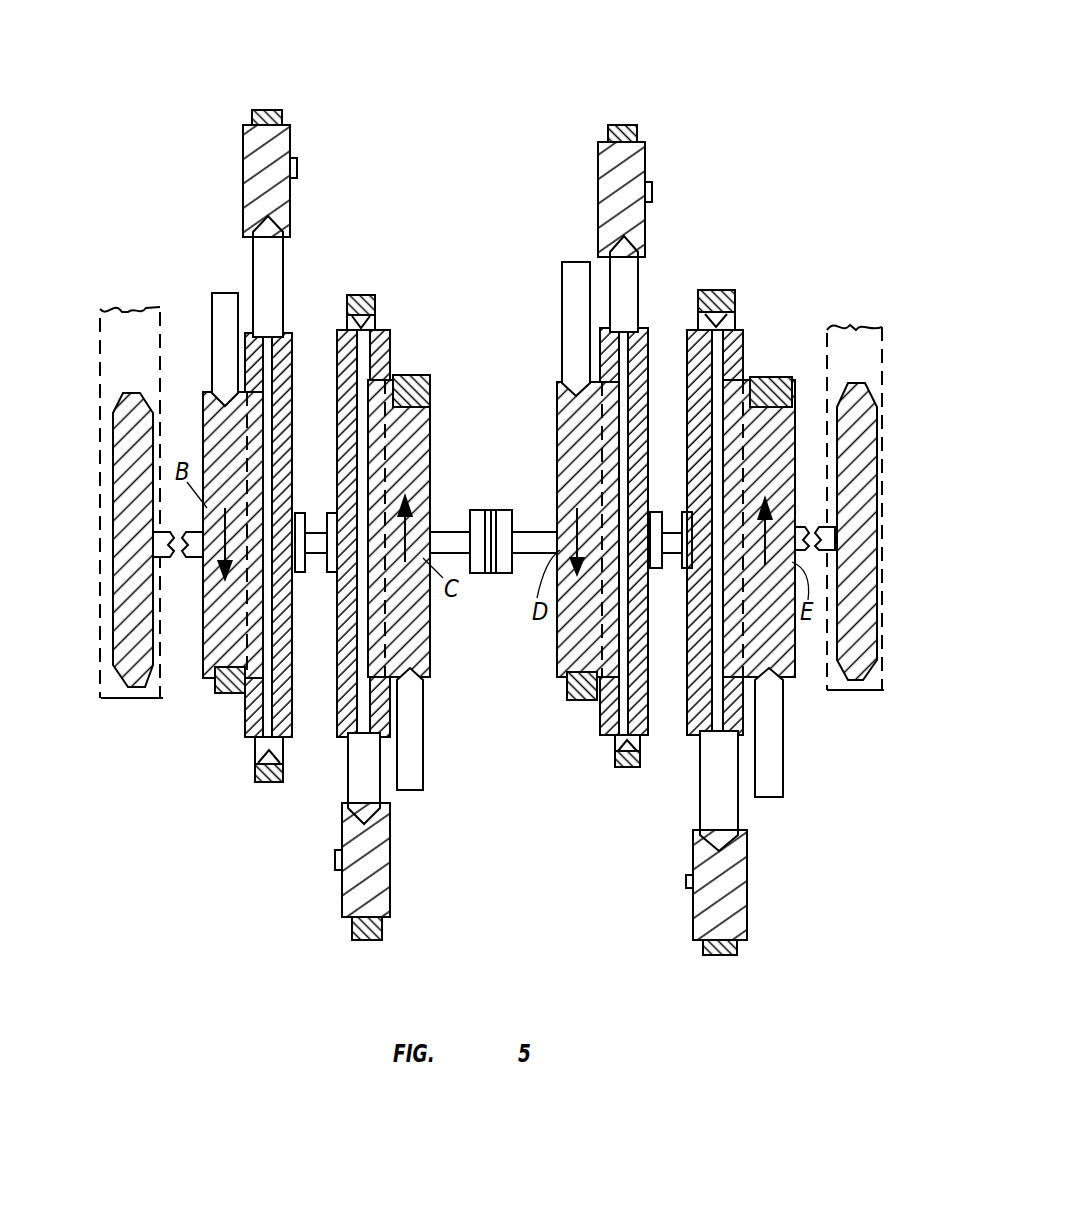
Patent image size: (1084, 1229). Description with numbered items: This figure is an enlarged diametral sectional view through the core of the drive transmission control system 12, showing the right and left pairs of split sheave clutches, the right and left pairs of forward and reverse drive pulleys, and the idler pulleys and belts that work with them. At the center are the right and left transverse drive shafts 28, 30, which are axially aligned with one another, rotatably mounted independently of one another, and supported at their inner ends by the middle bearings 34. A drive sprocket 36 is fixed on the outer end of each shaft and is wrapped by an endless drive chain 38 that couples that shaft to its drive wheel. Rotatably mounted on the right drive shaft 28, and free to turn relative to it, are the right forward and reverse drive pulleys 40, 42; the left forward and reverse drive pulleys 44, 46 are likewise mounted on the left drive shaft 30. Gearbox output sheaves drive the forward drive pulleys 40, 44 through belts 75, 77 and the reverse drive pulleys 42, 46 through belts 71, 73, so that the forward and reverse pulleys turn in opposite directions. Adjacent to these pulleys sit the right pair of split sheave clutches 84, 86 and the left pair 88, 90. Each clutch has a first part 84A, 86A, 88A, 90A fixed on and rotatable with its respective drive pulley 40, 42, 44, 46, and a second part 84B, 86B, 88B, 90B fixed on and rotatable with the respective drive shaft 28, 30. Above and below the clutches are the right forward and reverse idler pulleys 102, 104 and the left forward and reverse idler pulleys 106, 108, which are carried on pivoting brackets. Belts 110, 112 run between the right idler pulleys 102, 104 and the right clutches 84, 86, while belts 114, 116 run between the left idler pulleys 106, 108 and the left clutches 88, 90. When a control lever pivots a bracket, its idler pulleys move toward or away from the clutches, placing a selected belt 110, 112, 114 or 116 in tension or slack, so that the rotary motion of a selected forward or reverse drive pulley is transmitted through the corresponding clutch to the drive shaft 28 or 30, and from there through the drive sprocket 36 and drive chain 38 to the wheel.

The drive transmission control system 12 is at (784, 34).
The right transverse drive shaft 28 is at (438, 530).
The left transverse drive shaft 30 is at (533, 532).
The middle bearings 34 is at (495, 570).
The drive sprockets 36 is at (135, 687).
The endless drive chains 38 is at (123, 312).
The right forward drive pulley 40 is at (205, 402).
The right reverse drive pulley 42 is at (423, 643).
The left forward drive pulley 44 is at (562, 415).
The left reverse drive pulley 46 is at (797, 677).
The belt 71 is at (415, 757).
The belt 73 is at (775, 773).
The belt 75 is at (222, 292).
The belt 77 is at (572, 268).
The right forward split sheave clutch 84 is at (240, 733).
The first part of clutch 84A is at (248, 695).
The second part of clutch 84B is at (292, 340).
The right reverse split sheave clutch 86 is at (404, 349).
The first part of clutch 86A is at (390, 334).
The second part of clutch 86B is at (338, 718).
The left forward split sheave clutch 88 is at (657, 745).
The first part of clutch 88A is at (605, 715).
The second part of clutch 88B is at (648, 330).
The left reverse split sheave clutch 90 is at (777, 316).
The first part of clutch 90A is at (764, 318).
The second part of clutch 90B is at (692, 707).
The right forward idler pulley 102 is at (287, 135).
The right reverse idler pulley 104 is at (340, 902).
The left forward idler pulley 106 is at (598, 177).
The left reverse idler pulley 108 is at (748, 905).
The belt 110 is at (285, 252).
The belt 112 is at (347, 783).
The belt 114 is at (640, 270).
The belt 116 is at (738, 810).